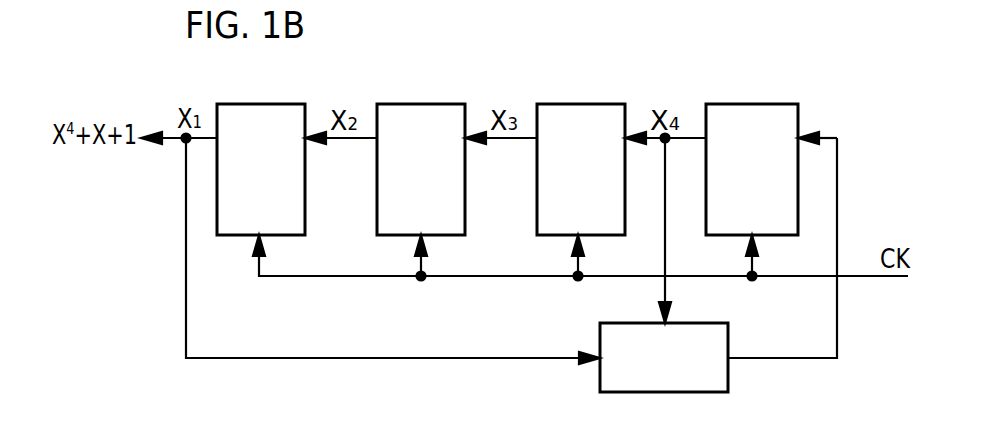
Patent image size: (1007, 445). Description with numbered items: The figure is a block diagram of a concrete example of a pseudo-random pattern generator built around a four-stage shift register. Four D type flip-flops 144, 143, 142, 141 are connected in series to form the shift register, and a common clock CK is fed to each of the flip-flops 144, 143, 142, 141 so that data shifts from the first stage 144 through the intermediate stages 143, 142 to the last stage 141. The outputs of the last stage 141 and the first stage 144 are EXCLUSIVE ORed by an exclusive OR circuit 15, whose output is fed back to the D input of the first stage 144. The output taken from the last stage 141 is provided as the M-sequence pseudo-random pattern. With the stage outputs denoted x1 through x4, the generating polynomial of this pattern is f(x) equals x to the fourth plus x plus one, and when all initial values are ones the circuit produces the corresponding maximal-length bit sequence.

The D type flip-flop (last shift stage) 141 is at (292, 103).
The D type flip-flop (shift stage) 142 is at (452, 103).
The D type flip-flop (shift stage) 143 is at (612, 103).
The D type flip-flop (first shift stage) 144 is at (780, 103).
The exclusive OR circuit 15 is at (730, 334).